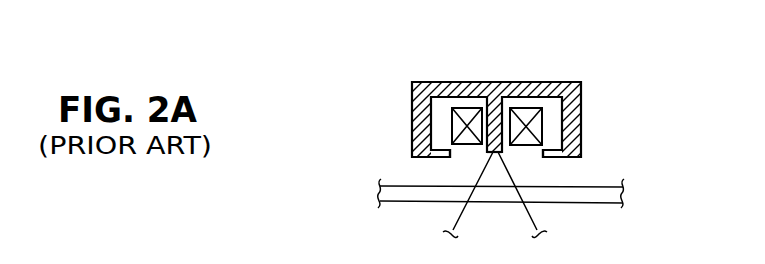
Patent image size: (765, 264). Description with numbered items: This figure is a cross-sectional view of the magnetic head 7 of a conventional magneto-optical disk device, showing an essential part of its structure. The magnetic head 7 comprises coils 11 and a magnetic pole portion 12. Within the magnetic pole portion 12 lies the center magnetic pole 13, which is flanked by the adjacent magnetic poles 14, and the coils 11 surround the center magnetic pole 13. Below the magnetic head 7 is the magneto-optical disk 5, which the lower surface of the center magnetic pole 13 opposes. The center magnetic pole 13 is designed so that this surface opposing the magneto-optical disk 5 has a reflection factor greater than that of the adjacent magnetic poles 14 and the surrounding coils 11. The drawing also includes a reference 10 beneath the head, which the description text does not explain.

The magnetic head 7 is at (388, 38).
The coils 11 is at (527, 112).
The magnetic pole portion 12 is at (582, 115).
The center magnetic pole 13 is at (487, 153).
The adjacent magnetic poles 14 is at (420, 118).
The magneto-optical disk 5 is at (627, 196).
The magnetic flux 10 is at (496, 174).